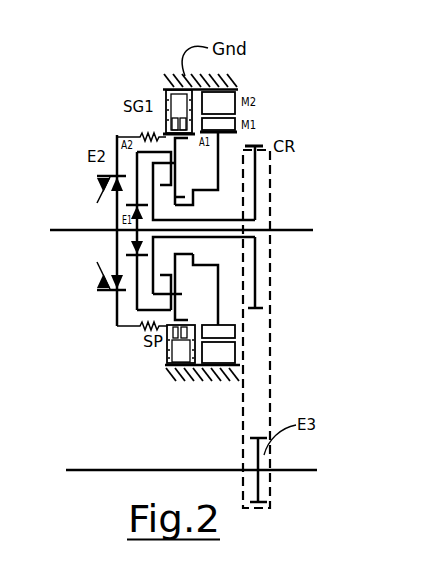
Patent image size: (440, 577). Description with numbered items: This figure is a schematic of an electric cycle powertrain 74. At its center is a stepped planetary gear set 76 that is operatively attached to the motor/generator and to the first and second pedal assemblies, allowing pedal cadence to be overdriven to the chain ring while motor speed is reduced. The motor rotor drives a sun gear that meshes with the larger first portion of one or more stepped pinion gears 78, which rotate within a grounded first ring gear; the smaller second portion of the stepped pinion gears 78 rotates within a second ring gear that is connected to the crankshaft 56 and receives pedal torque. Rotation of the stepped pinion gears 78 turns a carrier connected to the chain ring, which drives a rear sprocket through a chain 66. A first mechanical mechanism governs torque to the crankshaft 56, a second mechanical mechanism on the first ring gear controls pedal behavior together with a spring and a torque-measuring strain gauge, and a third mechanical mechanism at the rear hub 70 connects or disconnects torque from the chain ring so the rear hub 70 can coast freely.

The crankshaft 56 is at (283, 229).
The chain 66 is at (273, 372).
The rear hub 70 is at (302, 469).
The electric cycle powertrain 74 is at (338, 128).
The stepped planetary gear set 76 is at (188, 182).
The stepped pinion gears 78 is at (170, 190).